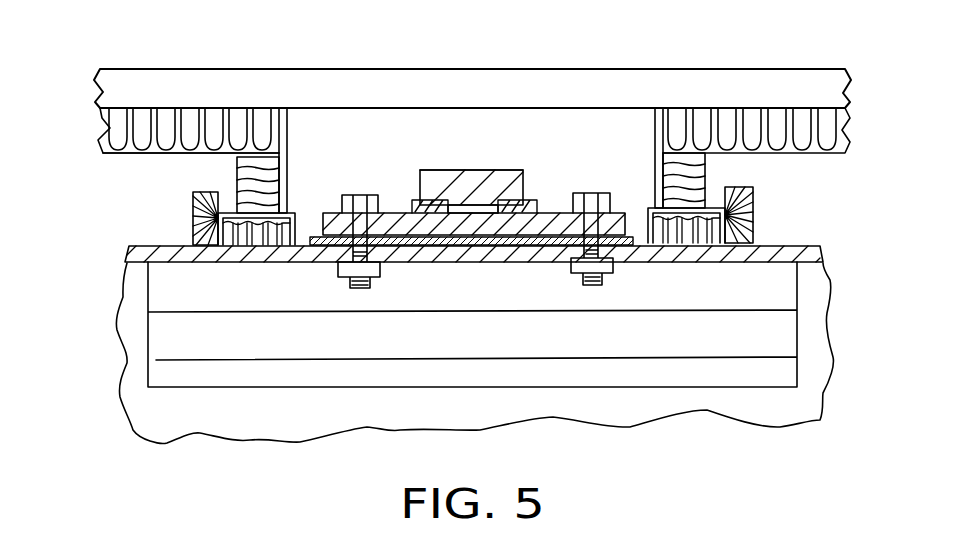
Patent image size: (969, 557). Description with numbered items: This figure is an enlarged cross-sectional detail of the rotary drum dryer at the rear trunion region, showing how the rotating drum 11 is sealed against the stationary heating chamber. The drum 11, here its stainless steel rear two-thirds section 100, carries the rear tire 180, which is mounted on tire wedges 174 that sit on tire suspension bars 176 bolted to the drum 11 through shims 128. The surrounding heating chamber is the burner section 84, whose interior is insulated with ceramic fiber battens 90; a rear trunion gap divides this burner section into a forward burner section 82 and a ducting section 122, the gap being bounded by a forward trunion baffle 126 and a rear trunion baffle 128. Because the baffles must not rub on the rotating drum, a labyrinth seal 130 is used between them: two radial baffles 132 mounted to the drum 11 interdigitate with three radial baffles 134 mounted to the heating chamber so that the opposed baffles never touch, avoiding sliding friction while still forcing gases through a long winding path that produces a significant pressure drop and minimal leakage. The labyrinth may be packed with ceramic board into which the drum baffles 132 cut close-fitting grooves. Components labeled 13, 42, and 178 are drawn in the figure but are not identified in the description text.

The cylindrical drum 11 is at (450, 263).
The electronic component 13 is at (470, 170).
The housing 42 is at (127, 298).
The forward burner section 82 is at (150, 158).
The burner section 84 is at (104, 155).
The ceramic fiber battens 90 is at (233, 172).
The rear two-thirds section 100 is at (140, 247).
The ducting section 122 is at (780, 156).
The forward trunion baffle 126 is at (289, 170).
The rear trunion baffle 128 is at (657, 160).
The labyrinth seal 130 is at (230, 247).
The radial baffles mounted to the drum 132 is at (224, 244).
The radial baffles mounted to the heating chamber 134 is at (194, 223).
The tire wedges 174 is at (537, 196).
The tire suspension bars 176 is at (556, 210).
The heat sink plate 178 is at (316, 228).
The rear tire 180 is at (452, 170).